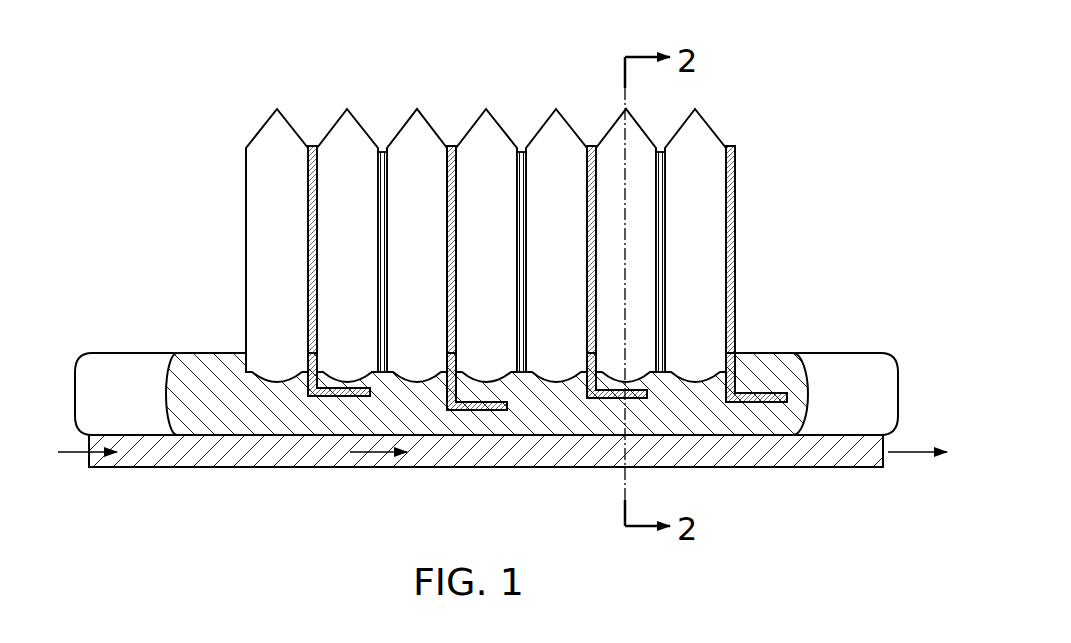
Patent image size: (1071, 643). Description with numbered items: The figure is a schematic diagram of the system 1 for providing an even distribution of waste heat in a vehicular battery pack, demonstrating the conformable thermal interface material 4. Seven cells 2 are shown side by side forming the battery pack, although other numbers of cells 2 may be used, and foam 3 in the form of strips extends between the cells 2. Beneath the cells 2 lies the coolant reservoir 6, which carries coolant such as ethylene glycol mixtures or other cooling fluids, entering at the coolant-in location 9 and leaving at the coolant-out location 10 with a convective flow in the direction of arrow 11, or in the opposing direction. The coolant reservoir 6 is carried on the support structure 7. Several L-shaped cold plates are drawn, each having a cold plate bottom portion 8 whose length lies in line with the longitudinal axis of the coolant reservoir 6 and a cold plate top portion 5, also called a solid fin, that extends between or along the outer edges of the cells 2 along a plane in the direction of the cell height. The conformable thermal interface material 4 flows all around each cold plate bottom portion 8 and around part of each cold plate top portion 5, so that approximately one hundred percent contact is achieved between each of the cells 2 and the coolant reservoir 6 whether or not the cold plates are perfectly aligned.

The system 1 is at (503, 92).
The cell 2 is at (331, 131).
The foam 3 is at (383, 150).
The conformable thermal interface material 4 is at (215, 353).
The cold plate top portion 5 is at (736, 200).
The coolant reservoir 6 is at (215, 468).
The support structure 7 is at (75, 395).
The cold plate bottom portion 8 is at (475, 411).
The coolant-in location 9 is at (70, 453).
The coolant-out location 10 is at (888, 454).
The arrow 11 is at (363, 453).